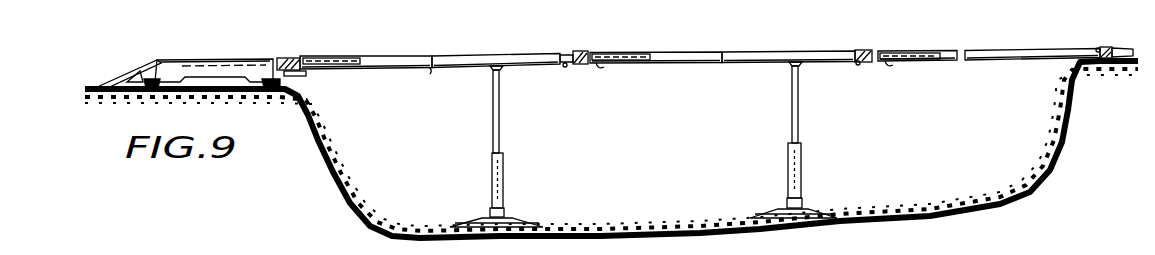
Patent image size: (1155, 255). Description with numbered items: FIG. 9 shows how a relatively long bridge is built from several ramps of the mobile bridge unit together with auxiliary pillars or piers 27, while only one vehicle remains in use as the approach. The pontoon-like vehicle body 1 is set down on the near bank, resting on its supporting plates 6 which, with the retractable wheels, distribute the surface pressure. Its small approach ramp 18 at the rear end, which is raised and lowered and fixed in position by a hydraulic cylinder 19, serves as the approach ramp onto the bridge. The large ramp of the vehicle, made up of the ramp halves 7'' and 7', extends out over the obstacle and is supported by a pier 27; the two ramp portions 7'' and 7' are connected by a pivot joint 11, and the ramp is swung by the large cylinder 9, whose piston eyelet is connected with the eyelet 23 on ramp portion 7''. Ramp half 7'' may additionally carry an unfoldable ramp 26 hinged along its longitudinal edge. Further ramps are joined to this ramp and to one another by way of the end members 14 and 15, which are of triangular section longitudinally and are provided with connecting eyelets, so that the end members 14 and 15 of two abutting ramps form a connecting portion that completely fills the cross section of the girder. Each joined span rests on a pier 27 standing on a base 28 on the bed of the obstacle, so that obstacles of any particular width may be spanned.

The vehicle body 1 is at (212, 59).
The supporting plates 6 is at (150, 78).
The ramp portion 7' is at (766, 54).
The ramp portion 7'' is at (635, 44).
The large cylinder 9 is at (300, 75).
The pivot joint 11 is at (432, 74).
The end pivot member 14 is at (565, 67).
The end pivot member 15 is at (287, 57).
The approach ramp 18 is at (113, 80).
The hydraulic cylinder 19 is at (137, 77).
The eyelet 23 is at (600, 67).
The unfoldable ramp 26 is at (338, 57).
The pier 27 is at (505, 185).
The base plate 28 is at (475, 220).